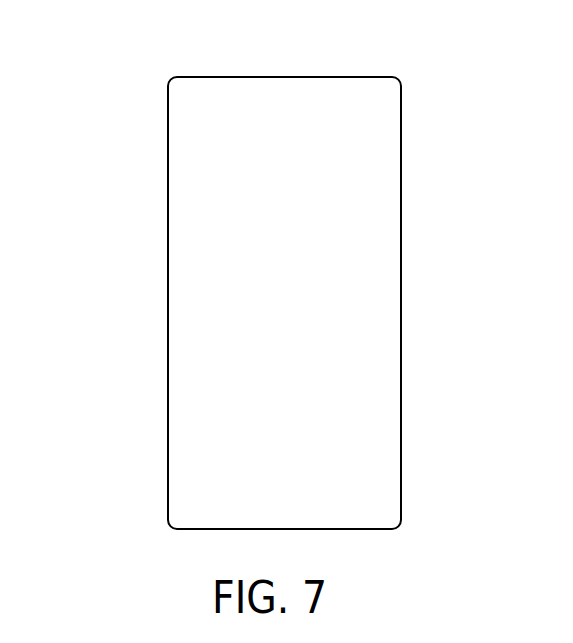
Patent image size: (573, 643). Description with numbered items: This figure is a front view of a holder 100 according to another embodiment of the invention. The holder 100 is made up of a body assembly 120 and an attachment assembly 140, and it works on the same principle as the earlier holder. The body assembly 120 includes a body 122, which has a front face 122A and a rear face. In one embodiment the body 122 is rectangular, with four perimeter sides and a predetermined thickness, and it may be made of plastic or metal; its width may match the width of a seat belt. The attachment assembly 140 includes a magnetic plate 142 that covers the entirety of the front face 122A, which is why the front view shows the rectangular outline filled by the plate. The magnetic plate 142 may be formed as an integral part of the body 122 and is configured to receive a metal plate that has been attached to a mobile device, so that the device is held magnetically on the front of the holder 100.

The holder 100 is at (166, 64).
The body assembly 120 is at (165, 155).
The body 122 is at (168, 202).
The front face 122A is at (373, 150).
The attachment assembly 140 is at (246, 336).
The magnetic plate 142 is at (373, 330).